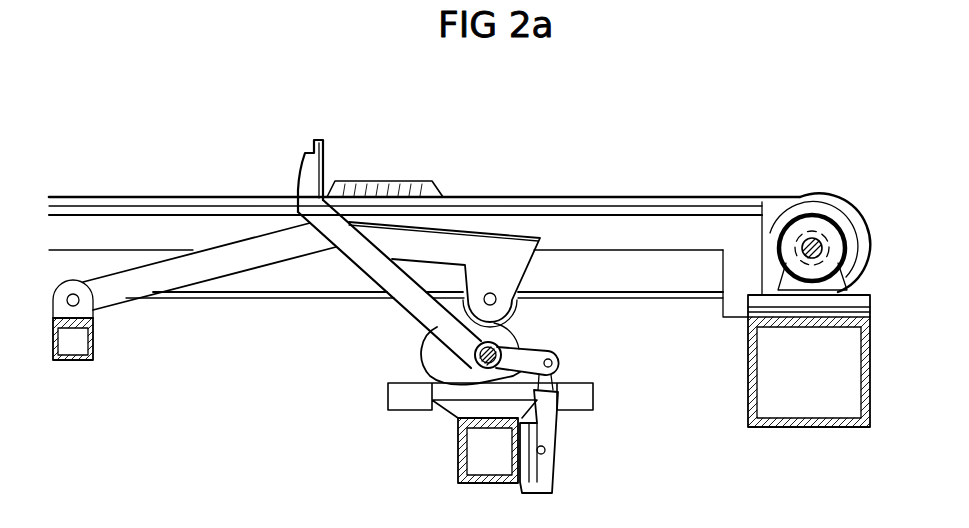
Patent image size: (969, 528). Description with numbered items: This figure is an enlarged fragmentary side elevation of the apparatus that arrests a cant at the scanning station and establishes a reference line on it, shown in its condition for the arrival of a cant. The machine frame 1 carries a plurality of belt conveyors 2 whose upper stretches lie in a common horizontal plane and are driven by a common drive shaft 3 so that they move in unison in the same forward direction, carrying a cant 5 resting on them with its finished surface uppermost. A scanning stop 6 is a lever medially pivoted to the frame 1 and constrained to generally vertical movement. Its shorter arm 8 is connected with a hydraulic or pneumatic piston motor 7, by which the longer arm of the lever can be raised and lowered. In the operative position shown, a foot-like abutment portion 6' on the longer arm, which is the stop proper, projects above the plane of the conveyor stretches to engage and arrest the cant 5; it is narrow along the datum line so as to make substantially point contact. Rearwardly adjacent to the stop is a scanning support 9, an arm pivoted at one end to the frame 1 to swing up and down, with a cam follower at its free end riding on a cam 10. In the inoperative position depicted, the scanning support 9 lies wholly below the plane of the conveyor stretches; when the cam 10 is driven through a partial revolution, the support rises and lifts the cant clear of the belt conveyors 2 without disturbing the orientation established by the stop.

The frame 1 is at (856, 422).
The belt conveyor 2 is at (785, 200).
The common drive shaft 3 is at (816, 238).
The cant 5 is at (403, 184).
The scanning stop 6 is at (389, 284).
The foot-like abutment portion 6' is at (285, 164).
The piston motor 7 is at (553, 437).
The shorter arm 8 is at (521, 357).
The scanning support 9 is at (467, 247).
The cam 10 is at (420, 350).